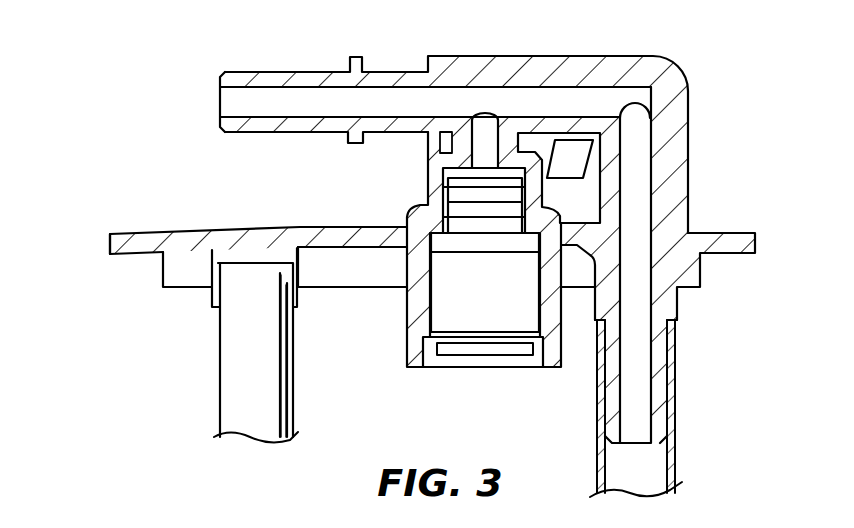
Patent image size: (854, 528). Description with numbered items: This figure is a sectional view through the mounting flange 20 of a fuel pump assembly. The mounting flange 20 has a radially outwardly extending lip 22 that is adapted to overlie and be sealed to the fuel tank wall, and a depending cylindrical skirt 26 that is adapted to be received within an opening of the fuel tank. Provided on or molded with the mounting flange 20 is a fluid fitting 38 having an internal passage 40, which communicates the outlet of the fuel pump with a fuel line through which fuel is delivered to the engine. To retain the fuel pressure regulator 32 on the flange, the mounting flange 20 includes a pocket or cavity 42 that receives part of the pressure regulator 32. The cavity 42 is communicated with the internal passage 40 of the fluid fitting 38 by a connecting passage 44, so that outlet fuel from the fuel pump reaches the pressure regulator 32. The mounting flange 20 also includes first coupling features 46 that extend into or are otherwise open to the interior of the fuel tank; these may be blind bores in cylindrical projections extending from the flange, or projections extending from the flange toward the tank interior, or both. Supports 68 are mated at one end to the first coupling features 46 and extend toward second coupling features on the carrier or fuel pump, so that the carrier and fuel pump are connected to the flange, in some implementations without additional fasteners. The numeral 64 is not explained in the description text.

The mounting flange 20 is at (318, 39).
The radially outwardly extending lip 22 is at (128, 240).
The depending cylindrical skirt 26 is at (700, 275).
The fuel pressure regulator 32 is at (520, 350).
The fluid fitting 38 is at (671, 115).
The internal passage 40 is at (637, 185).
The pocket or cavity 42 is at (433, 292).
The connecting passage 44 is at (485, 128).
The first coupling features 46 is at (212, 293).
The plate end 64 is at (110, 249).
The supports 68 is at (222, 372).